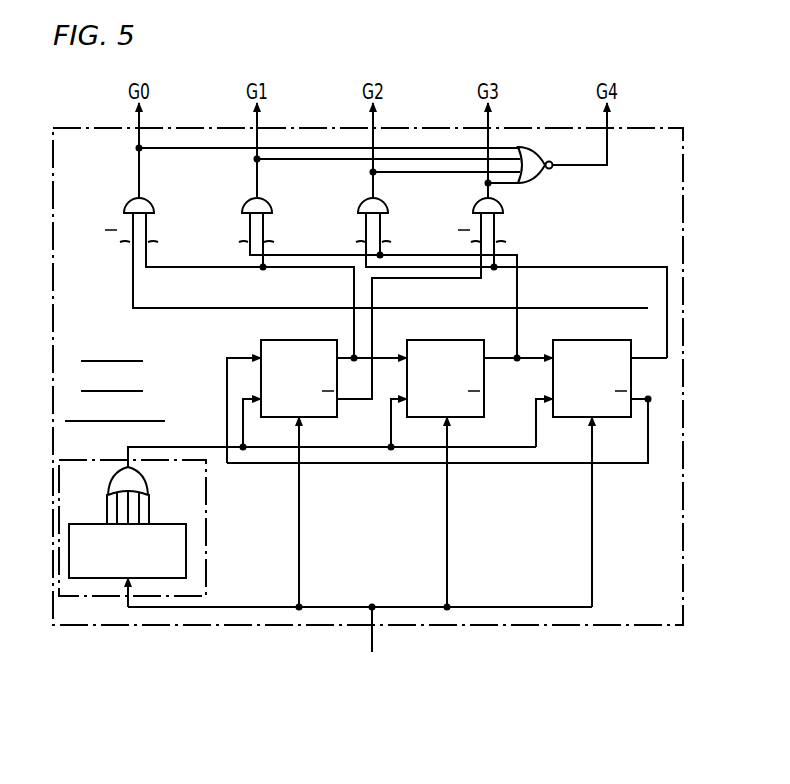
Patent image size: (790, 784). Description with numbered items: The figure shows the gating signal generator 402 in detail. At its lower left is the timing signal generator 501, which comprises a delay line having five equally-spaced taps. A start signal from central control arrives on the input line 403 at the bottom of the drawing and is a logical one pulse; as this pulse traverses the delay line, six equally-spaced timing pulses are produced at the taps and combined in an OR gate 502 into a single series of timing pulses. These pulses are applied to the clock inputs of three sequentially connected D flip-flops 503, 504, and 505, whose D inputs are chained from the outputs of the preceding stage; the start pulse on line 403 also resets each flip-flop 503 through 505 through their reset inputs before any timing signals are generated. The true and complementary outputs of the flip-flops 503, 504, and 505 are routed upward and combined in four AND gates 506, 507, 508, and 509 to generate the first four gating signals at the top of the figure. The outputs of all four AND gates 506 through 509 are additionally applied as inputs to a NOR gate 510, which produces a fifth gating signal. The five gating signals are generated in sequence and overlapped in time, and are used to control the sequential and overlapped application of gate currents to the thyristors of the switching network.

The gating signal generator 402 is at (53, 388).
The input line from central control 403 is at (374, 639).
The timing signal generator 501 is at (297, 527).
The OR gate 502 is at (143, 480).
The D flip-flop 503 is at (289, 340).
The D flip-flop 504 is at (437, 340).
The D flip-flop 505 is at (582, 340).
The AND gate 506 is at (128, 203).
The AND gate 507 is at (246, 203).
The AND gate 508 is at (362, 203).
The AND gate 509 is at (477, 203).
The NOR gate 510 is at (532, 172).